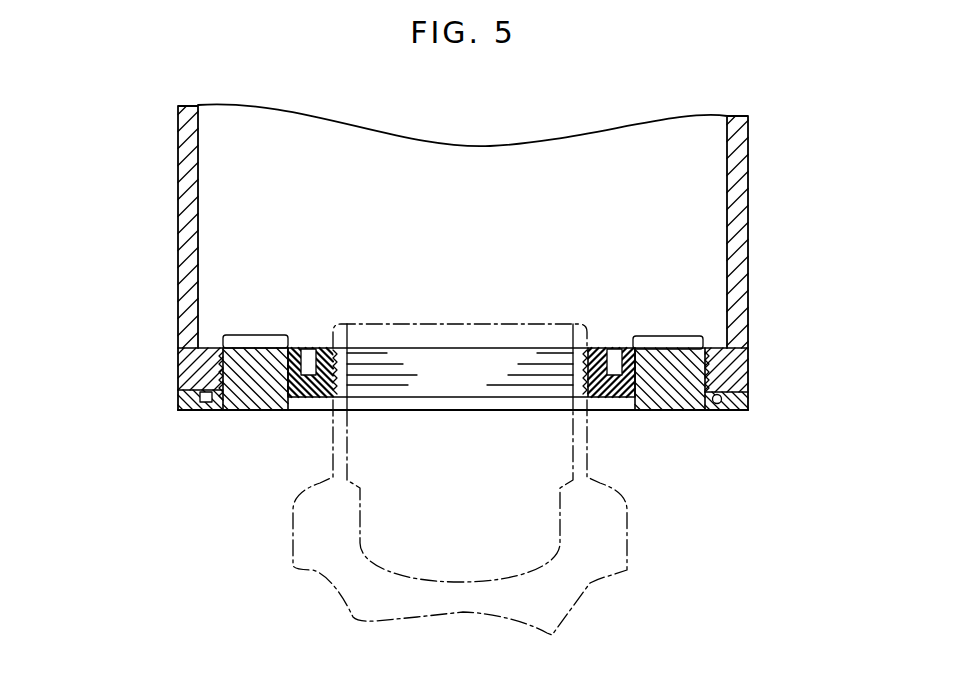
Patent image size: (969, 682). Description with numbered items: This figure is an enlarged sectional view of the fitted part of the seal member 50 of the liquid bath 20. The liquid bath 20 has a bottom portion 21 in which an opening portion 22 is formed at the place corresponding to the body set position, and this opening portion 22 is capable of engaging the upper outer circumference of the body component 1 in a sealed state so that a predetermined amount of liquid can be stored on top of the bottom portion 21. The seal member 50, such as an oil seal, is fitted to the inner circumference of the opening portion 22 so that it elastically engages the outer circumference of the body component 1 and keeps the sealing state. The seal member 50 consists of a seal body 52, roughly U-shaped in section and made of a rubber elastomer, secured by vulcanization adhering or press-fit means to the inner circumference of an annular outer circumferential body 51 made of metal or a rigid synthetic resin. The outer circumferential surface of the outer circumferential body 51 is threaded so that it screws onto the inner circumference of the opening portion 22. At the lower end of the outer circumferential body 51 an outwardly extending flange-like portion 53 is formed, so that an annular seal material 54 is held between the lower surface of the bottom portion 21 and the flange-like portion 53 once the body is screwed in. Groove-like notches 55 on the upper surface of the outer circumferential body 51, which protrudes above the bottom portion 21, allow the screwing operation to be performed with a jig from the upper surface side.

The body component 1 is at (320, 510).
The liquid bath 20 is at (168, 135).
The bottom portion 21 is at (200, 343).
The opening portion 22 is at (213, 347).
The seal member 50 is at (674, 421).
The outer circumferential body 51 is at (682, 355).
The seal body 52 is at (612, 412).
The flange-like portion 53 is at (733, 405).
The annular seal material 54 is at (720, 413).
The groove-like notches 55 is at (258, 345).